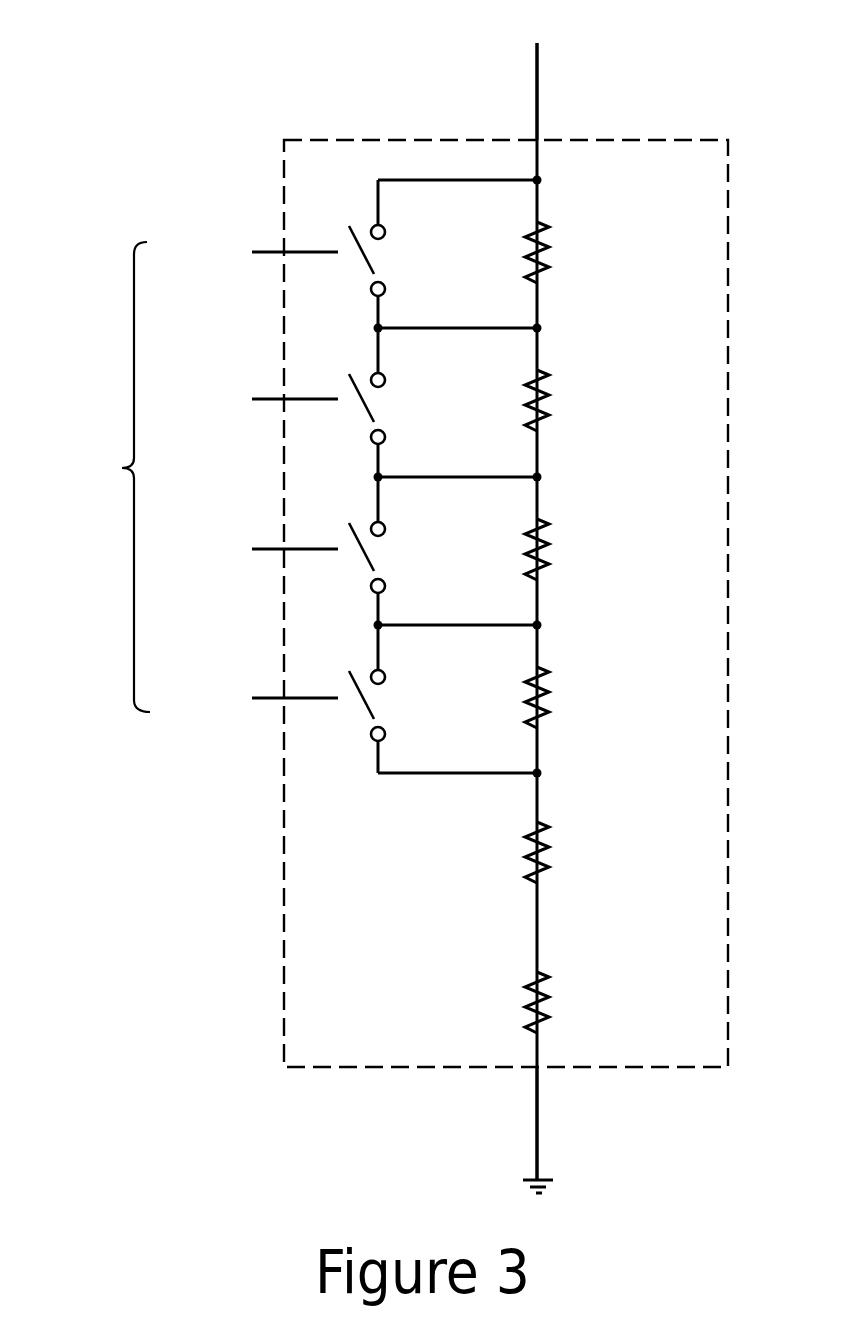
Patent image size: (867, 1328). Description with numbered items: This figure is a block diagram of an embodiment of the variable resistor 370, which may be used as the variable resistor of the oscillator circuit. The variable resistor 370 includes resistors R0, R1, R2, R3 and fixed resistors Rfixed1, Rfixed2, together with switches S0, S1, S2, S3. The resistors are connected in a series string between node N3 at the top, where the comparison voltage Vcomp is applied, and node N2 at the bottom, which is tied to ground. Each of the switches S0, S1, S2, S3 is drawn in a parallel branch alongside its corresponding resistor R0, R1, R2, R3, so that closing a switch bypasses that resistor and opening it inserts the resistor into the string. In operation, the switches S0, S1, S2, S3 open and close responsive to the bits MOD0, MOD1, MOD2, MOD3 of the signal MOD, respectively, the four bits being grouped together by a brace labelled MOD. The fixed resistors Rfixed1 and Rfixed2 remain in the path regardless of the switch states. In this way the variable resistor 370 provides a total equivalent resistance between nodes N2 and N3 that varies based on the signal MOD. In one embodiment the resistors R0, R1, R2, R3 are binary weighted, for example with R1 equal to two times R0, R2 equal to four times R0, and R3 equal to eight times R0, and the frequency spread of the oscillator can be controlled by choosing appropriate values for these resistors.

The variable resistor 370 is at (683, 202).
The switch S0 is at (386, 254).
The switch S1 is at (386, 402).
The switch S2 is at (386, 551).
The switch S3 is at (386, 699).
The resistor R0 is at (515, 252).
The resistor R1 is at (515, 400).
The resistor R2 is at (515, 549).
The resistor R3 is at (515, 697).
The fixed resistor Rfixed1 is at (489, 852).
The fixed resistor Rfixed2 is at (489, 1002).
The node N3 is at (537, 114).
The node N2 is at (538, 1125).
The comparison voltage Vcomp is at (540, 53).
The bit of signal MOD MOD0 is at (250, 254).
The bit of signal MOD MOD1 is at (250, 400).
The bit of signal MOD MOD2 is at (250, 550).
The bit of signal MOD MOD3 is at (250, 699).
The signal MOD is at (99, 477).